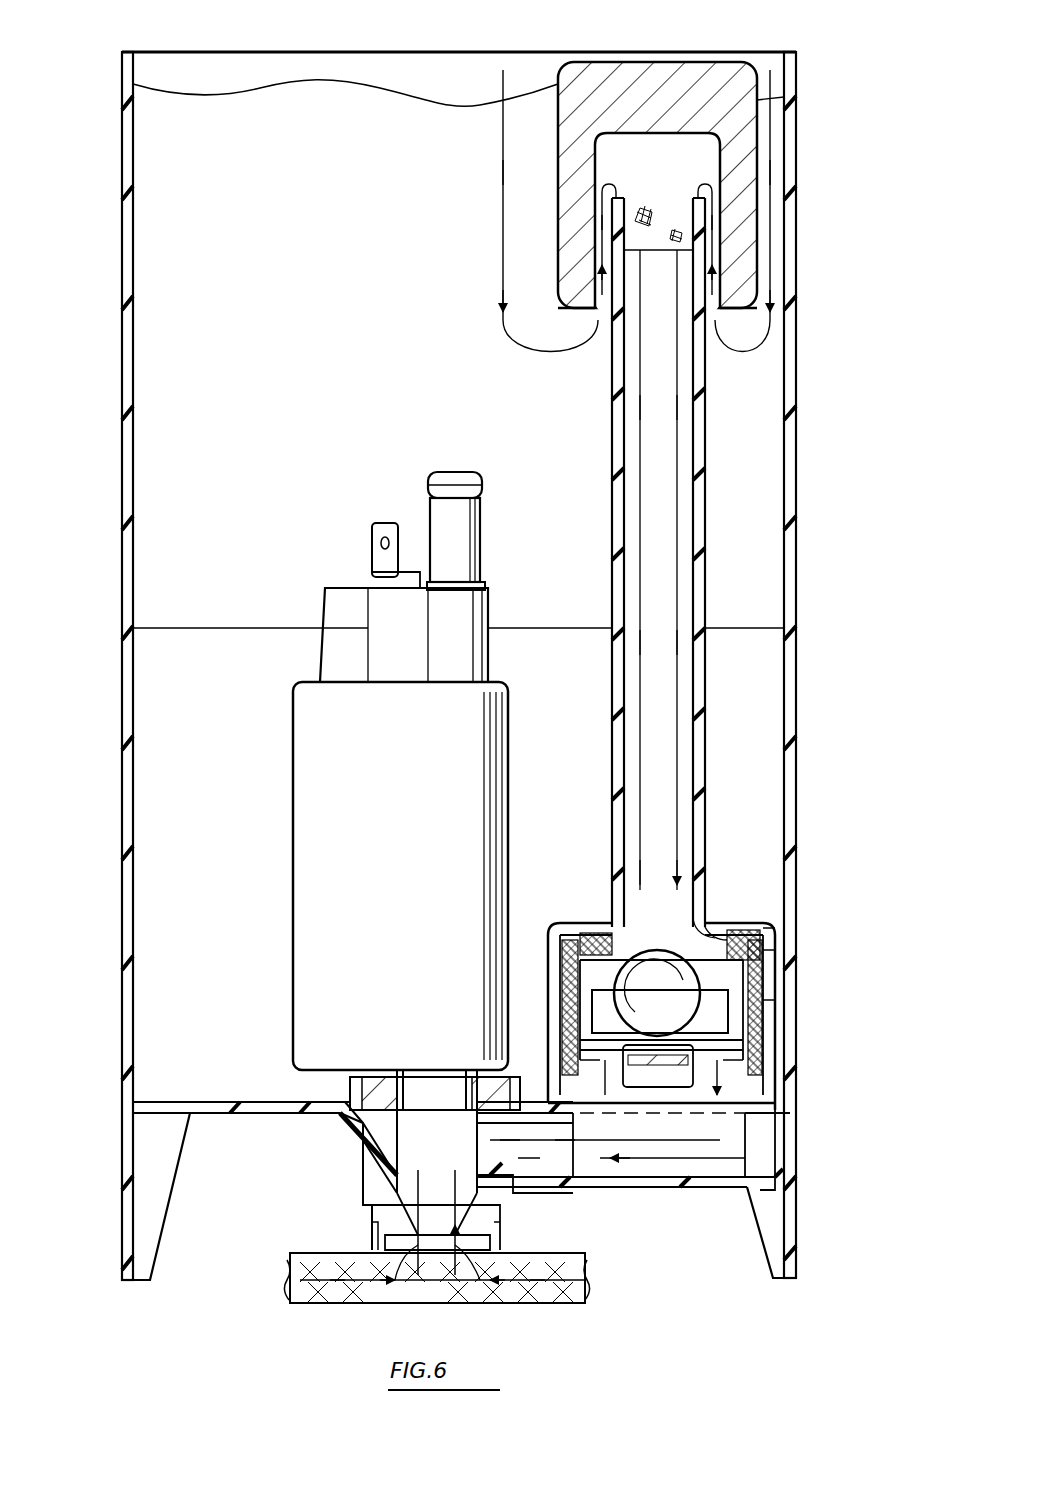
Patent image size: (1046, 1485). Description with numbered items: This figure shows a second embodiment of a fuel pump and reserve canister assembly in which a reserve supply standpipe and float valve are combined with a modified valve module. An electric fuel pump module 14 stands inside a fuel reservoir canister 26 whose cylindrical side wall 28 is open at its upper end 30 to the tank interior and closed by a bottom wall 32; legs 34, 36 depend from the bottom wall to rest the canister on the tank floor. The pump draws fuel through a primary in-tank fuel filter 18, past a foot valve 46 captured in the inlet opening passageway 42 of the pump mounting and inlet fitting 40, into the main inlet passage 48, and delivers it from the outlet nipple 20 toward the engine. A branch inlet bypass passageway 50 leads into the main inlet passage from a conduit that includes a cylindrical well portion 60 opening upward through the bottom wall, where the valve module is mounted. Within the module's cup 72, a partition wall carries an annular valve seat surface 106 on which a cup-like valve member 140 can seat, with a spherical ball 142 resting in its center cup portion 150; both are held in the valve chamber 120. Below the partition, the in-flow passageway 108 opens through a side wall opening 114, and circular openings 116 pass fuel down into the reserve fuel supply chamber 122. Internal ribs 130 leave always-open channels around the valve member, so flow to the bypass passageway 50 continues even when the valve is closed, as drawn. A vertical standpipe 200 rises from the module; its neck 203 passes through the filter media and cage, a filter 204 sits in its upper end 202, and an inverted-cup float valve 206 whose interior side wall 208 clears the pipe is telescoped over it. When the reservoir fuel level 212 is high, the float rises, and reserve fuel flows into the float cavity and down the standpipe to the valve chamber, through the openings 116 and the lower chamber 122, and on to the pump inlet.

The electric fuel pump module 14 is at (290, 772).
The primary in-tank fuel filter 18 is at (335, 1250).
The outlet nipple 20 is at (478, 525).
The fuel reservoir canister 26 is at (120, 190).
The cylindrical side wall 28 is at (122, 326).
The upper end of canister 30 is at (178, 50).
The bottom wall 32 is at (188, 1102).
The leg 34 is at (126, 1178).
The leg 36 is at (798, 1240).
The pump mounting and inlet fitting 40 is at (365, 1163).
The inlet opening passageway 42 is at (478, 1258).
The foot valve 46 is at (437, 1250).
The main inlet passage 48 is at (366, 1127).
The branch inlet bypass passageway 50 is at (540, 1170).
The cylindrical well portion 60 is at (735, 1162).
The cup 72 is at (712, 1012).
The annular valve seat surface 106 is at (735, 1040).
The in-flow passageway 108 is at (650, 1090).
The opening in cup side wall 114 is at (680, 1090).
The circular openings 116 is at (592, 1055).
The valve chamber 120 is at (595, 975).
The reserve fuel supply chamber 122 is at (668, 1150).
The internal ribs 130 is at (600, 1012).
The cup-like valve member 140 is at (777, 955).
The spherical ball 142 is at (770, 1000).
The center cup portion 150 is at (742, 930).
The vertical standpipe 200 is at (610, 590).
The upper end of standpipe 202 is at (621, 205).
The neck of standpipe 203 is at (693, 830).
The filter 204 is at (666, 205).
The float valve 206 is at (555, 214).
The cylindrical interior side wall 208 is at (600, 172).
The reservoir fuel level 212 is at (400, 96).